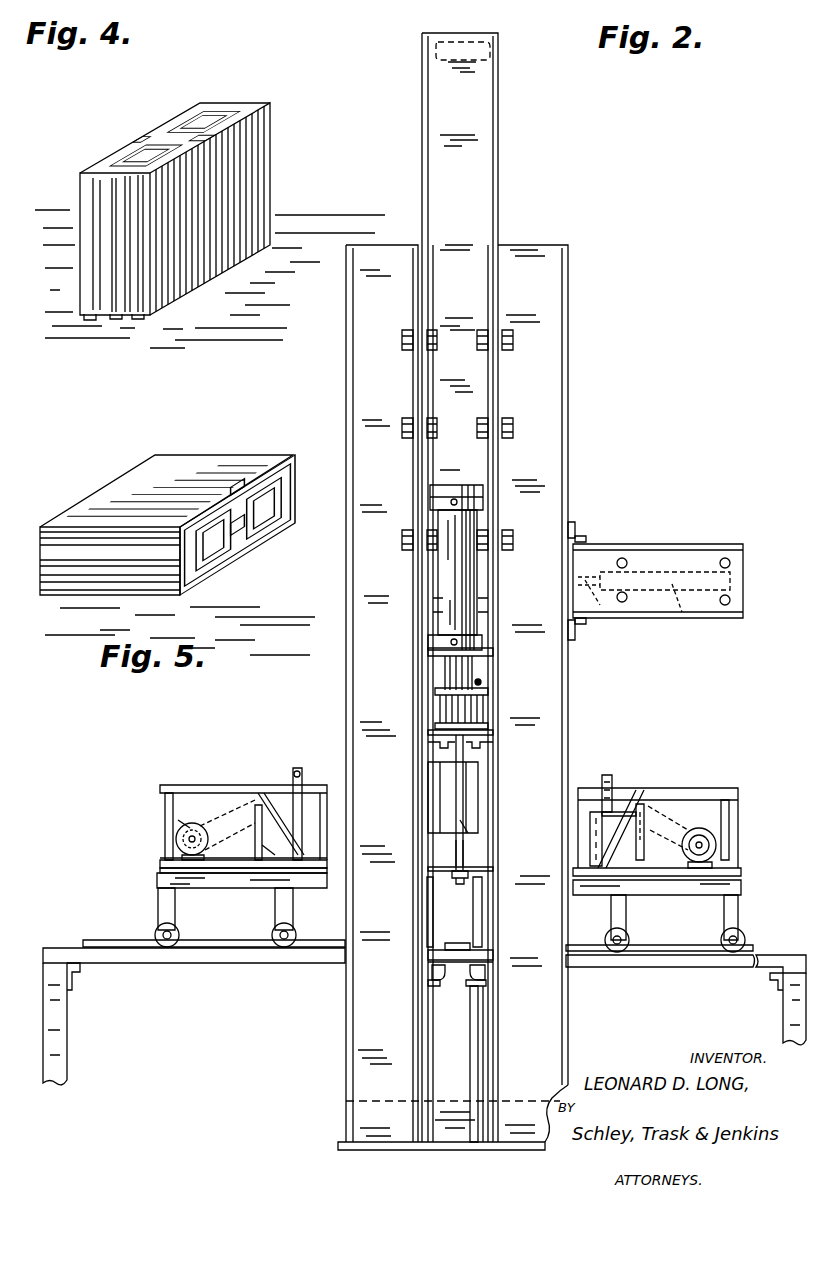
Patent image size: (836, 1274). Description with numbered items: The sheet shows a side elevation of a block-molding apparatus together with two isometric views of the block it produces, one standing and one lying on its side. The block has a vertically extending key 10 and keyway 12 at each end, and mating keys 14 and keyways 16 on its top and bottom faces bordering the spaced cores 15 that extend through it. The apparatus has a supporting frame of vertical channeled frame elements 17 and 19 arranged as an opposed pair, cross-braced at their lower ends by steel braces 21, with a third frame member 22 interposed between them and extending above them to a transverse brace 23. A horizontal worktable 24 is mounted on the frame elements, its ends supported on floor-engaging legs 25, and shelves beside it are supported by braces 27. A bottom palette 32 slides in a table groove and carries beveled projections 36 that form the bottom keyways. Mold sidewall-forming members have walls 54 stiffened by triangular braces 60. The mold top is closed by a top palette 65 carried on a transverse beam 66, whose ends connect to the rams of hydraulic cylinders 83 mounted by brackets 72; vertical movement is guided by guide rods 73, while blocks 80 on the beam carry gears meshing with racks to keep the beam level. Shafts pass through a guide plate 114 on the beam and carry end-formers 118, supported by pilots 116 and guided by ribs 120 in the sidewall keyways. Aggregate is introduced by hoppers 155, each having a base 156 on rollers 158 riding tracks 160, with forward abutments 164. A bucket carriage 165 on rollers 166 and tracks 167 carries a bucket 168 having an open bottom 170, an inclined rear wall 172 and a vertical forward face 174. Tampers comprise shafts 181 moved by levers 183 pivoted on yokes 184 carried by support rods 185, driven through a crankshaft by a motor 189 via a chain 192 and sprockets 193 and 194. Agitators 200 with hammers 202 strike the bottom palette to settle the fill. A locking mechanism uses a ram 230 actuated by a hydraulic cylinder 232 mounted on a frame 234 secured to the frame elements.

In FIG. 4, the key 10 is at (100, 310).
In FIG. 5, the key 10 is at (70, 572).
In FIG. 4, the keyway 12 is at (134, 300).
In FIG. 5, the keyway 12 is at (52, 543).
In FIG. 4, the key 14 is at (136, 150).
In FIG. 5, the core 15 is at (216, 520).
In FIG. 5, the keyway 16 is at (290, 490).
In FIG. 2, the frame element 17 is at (345, 410).
In FIG. 2, the frame element 19 is at (566, 488).
In FIG. 2, the brace 21 is at (449, 1105).
In FIG. 2, the frame member 22 is at (501, 192).
In FIG. 2, the brace 23 is at (488, 42).
In FIG. 2, the worktable 24 is at (129, 958).
In FIG. 2, the leg 25 is at (60, 1040).
In FIG. 2, the brace 27 is at (483, 1040).
In FIG. 2, the bottom palette 32 is at (482, 954).
In FIG. 2, the projection 36 is at (456, 943).
In FIG. 2, the wall 54 is at (470, 898).
In FIG. 2, the brace 60 is at (484, 922).
In FIG. 2, the top palette 65 is at (487, 742).
In FIG. 2, the beam 66 is at (483, 712).
In FIG. 2, the bracket 72 is at (483, 502).
In FIG. 2, the guide rod 73 is at (463, 756).
In FIG. 2, the block 80 is at (500, 668).
In FIG. 2, the hydraulic cylinder 83 is at (460, 632).
In FIG. 2, the guide plate 114 is at (481, 684).
In FIG. 2, the pilot 116 is at (460, 845).
In FIG. 2, the end-former 118 is at (466, 825).
In FIG. 2, the rib 120 is at (428, 784).
In FIG. 2, the hopper 155 is at (183, 912).
In FIG. 2, the base 156 is at (158, 885).
In FIG. 2, the roller 158 is at (157, 935).
In FIG. 2, the track 160 is at (207, 945).
In FIG. 2, the abutment 164 is at (330, 882).
In FIG. 2, the bucket carriage 165 is at (153, 830).
In FIG. 2, the roller 166 is at (162, 858).
In FIG. 2, the track 167 is at (160, 868).
In FIG. 2, the bucket 168 is at (283, 768).
In FIG. 2, the open bottom 170 is at (598, 868).
In FIG. 2, the rear wall 172 is at (266, 792).
In FIG. 2, the forward face 174 is at (327, 835).
In FIG. 2, the shaft 181 is at (578, 835).
In FIG. 2, the lever 183 is at (605, 835).
In FIG. 2, the yoke 184 is at (590, 866).
In FIG. 2, the support rod 185 is at (612, 780).
In FIG. 2, the motor 189 is at (193, 823).
In FIG. 2, the chain 192 is at (688, 835).
In FIG. 2, the sprocket 193 is at (168, 830).
In FIG. 2, the sprocket 194 is at (652, 820).
In FIG. 2, the agitator 200 is at (478, 985).
In FIG. 2, the hammer 202 is at (457, 983).
In FIG. 2, the ram 230 is at (600, 612).
In FIG. 2, the hydraulic cylinder 232 is at (684, 620).
In FIG. 2, the frame 234 is at (682, 550).